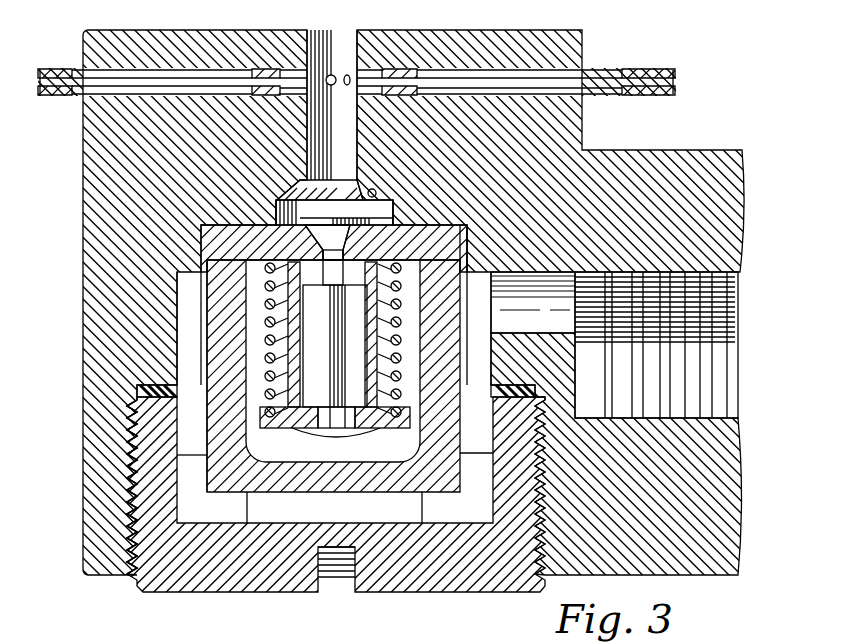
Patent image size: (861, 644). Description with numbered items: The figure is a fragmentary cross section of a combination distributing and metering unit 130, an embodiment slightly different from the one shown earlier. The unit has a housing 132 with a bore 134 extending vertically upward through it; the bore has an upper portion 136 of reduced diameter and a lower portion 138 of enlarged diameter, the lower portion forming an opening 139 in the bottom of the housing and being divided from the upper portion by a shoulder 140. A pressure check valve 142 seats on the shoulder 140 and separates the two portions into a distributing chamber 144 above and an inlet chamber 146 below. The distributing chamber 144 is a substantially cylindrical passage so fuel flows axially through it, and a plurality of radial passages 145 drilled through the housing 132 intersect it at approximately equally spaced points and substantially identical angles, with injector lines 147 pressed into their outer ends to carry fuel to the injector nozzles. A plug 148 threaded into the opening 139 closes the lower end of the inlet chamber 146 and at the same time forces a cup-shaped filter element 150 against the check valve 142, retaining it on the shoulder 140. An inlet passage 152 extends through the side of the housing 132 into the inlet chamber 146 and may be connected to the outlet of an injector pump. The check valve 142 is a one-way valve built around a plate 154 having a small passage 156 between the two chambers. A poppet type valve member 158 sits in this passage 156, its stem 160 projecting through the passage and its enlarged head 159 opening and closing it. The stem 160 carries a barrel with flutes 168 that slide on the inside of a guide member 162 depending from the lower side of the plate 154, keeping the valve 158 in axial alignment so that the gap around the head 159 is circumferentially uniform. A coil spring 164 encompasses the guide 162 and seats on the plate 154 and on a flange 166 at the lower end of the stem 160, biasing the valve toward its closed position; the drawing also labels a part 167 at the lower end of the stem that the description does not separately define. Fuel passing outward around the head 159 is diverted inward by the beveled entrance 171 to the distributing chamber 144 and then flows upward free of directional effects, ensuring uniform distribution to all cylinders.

The combination distributing and metering unit 130 is at (84, 292).
The housing 132 is at (605, 162).
The bore 134 is at (198, 349).
The upper portion 136 is at (340, 48).
The lower portion 138 is at (492, 352).
The opening 139 is at (127, 562).
The shoulder 140 is at (420, 222).
The pressure check valve 142 is at (238, 232).
The distributing chamber 144 is at (350, 150).
The radial passages 145 is at (344, 84).
The inlet chamber 146 is at (405, 470).
The injector lines 147 is at (62, 70).
The plug 148 is at (473, 580).
The cup-shaped filter element 150 is at (240, 492).
The inlet passage 152 is at (522, 302).
The plate 154 is at (463, 256).
The passage 156 is at (335, 212).
The poppet type valve member 158 is at (366, 263).
The enlarged head 159 is at (320, 190).
The stem 160 is at (312, 250).
The guide member 162 is at (380, 345).
The coil spring 164 is at (266, 322).
The flange 166 is at (278, 428).
The valve disc 167 is at (332, 430).
The flutes 168 is at (388, 428).
The beveled entrance 171 is at (376, 194).